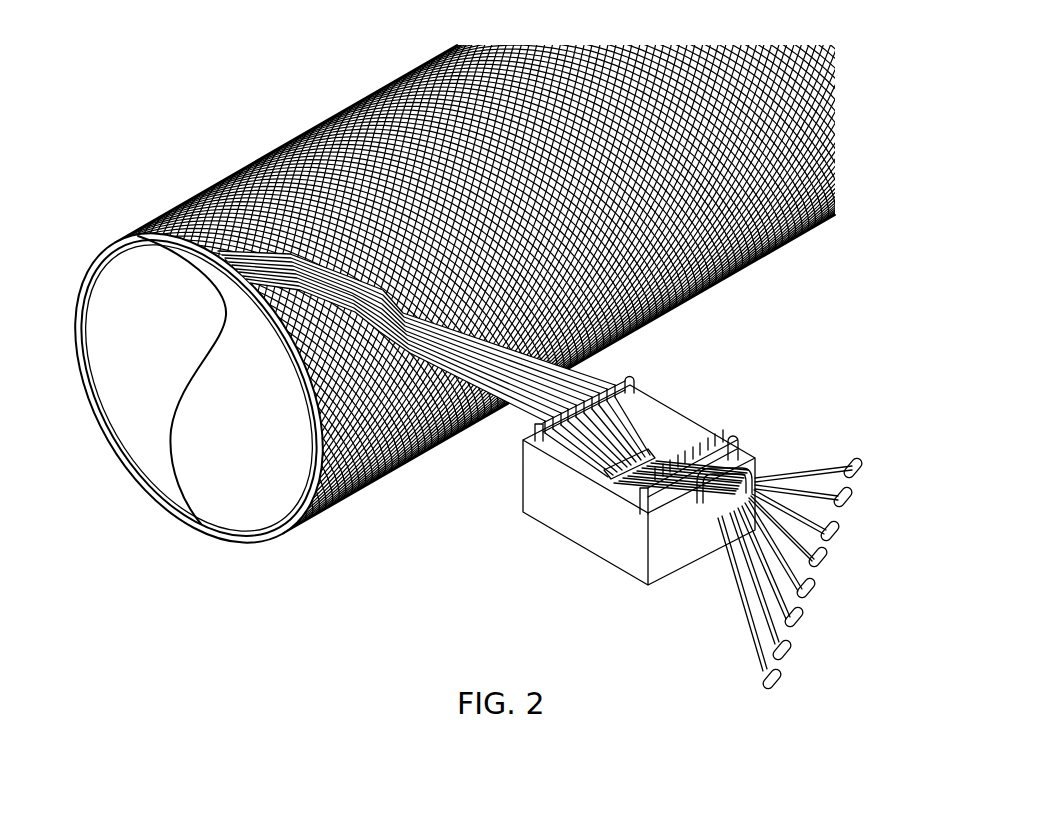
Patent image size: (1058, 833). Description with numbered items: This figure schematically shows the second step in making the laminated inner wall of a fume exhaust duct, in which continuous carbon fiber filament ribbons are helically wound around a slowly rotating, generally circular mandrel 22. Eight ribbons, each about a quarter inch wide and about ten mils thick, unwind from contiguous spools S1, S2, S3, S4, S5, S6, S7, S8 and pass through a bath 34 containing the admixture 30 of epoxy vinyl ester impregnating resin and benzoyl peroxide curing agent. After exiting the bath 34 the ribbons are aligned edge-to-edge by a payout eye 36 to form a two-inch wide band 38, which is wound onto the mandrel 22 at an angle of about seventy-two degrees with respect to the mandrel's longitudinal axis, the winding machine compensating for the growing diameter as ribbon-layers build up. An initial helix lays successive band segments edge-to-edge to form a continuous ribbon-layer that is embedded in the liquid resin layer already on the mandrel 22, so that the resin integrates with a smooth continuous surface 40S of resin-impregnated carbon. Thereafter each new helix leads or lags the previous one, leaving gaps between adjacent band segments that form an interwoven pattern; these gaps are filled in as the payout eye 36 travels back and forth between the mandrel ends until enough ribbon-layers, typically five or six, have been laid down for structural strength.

The mandrel 22 is at (182, 165).
The smooth continuous surface 40S is at (337, 378).
The band 38 is at (515, 415).
The payout eye 36 is at (604, 378).
The admixture 30 is at (654, 456).
The bath 34 is at (546, 534).
The spool S1 is at (770, 688).
The spool S2 is at (780, 659).
The spool S3 is at (792, 626).
The spool S4 is at (804, 597).
The spool S5 is at (816, 566).
The spool S6 is at (828, 540).
The spool S7 is at (841, 506).
The spool S8 is at (851, 477).